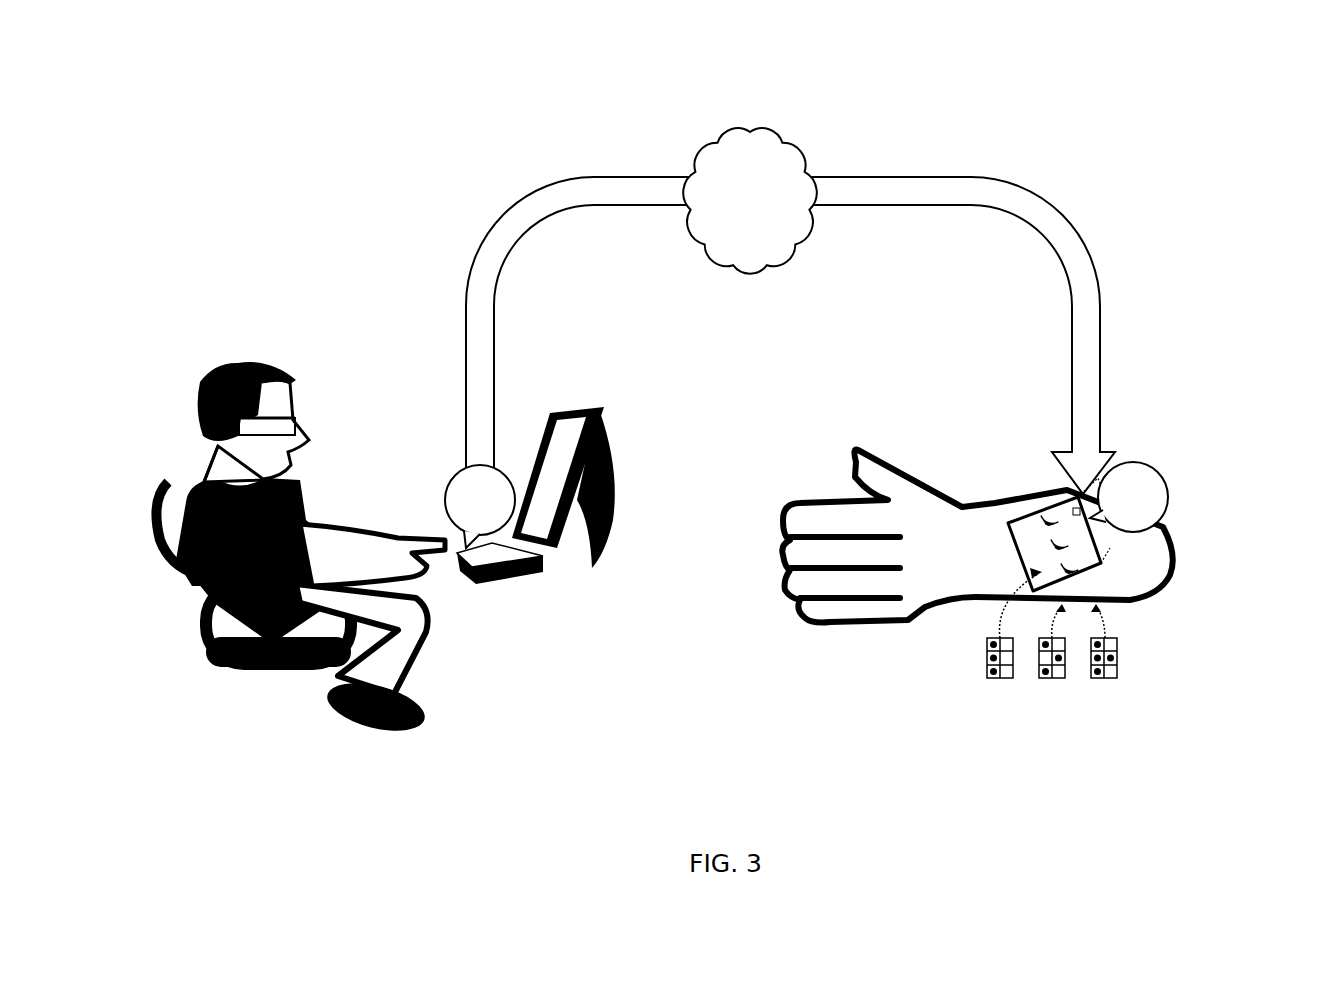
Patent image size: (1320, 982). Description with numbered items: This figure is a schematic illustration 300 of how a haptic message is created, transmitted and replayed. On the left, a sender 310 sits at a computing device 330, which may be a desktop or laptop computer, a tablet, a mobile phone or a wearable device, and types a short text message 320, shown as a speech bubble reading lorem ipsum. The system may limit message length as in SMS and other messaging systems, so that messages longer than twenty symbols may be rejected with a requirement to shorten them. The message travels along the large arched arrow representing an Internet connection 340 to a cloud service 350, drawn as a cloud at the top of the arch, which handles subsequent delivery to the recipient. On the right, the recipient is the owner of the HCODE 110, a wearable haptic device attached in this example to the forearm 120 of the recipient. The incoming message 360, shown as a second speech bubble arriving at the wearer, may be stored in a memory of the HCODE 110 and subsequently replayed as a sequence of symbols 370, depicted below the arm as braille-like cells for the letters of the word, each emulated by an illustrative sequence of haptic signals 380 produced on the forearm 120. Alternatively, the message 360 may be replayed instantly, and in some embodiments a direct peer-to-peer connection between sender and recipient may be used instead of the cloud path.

The schematic illustration 300 is at (1276, 134).
The sender 310 is at (234, 350).
The short text message 320 is at (438, 488).
The computing device 330 is at (602, 447).
The Internet connection 340 is at (528, 200).
The cloud service 350 is at (678, 160).
The incoming message 360 is at (1137, 462).
The sequence of symbols 370 is at (1026, 703).
The sequence of haptic signals 380 is at (1077, 550).
The HCODE 110 is at (1040, 500).
The forearm 120 is at (985, 537).